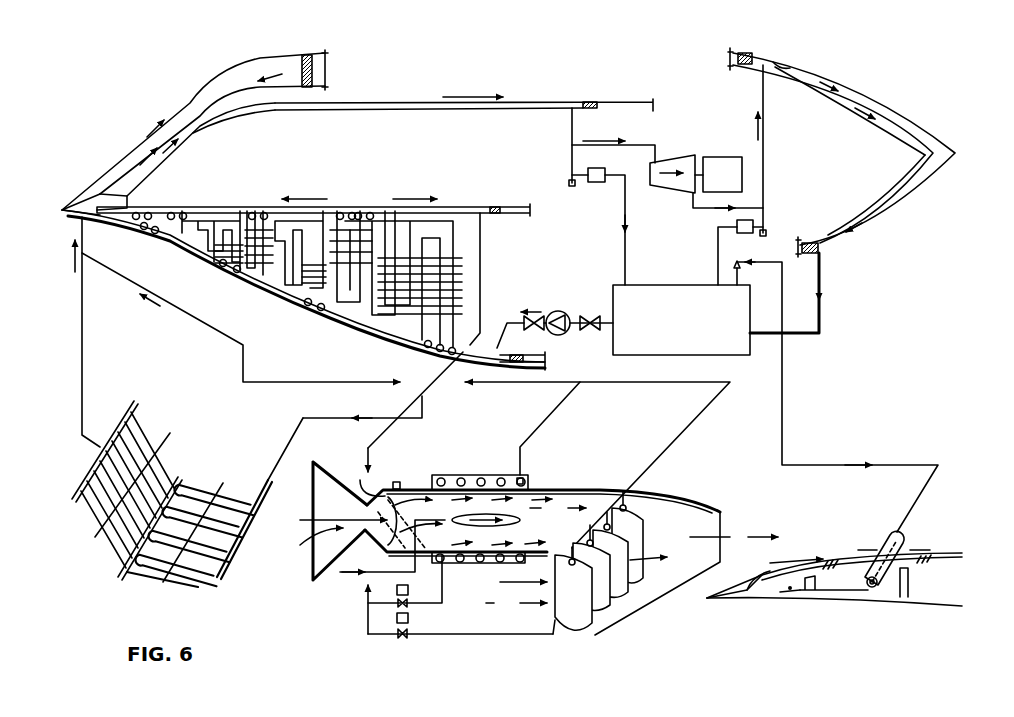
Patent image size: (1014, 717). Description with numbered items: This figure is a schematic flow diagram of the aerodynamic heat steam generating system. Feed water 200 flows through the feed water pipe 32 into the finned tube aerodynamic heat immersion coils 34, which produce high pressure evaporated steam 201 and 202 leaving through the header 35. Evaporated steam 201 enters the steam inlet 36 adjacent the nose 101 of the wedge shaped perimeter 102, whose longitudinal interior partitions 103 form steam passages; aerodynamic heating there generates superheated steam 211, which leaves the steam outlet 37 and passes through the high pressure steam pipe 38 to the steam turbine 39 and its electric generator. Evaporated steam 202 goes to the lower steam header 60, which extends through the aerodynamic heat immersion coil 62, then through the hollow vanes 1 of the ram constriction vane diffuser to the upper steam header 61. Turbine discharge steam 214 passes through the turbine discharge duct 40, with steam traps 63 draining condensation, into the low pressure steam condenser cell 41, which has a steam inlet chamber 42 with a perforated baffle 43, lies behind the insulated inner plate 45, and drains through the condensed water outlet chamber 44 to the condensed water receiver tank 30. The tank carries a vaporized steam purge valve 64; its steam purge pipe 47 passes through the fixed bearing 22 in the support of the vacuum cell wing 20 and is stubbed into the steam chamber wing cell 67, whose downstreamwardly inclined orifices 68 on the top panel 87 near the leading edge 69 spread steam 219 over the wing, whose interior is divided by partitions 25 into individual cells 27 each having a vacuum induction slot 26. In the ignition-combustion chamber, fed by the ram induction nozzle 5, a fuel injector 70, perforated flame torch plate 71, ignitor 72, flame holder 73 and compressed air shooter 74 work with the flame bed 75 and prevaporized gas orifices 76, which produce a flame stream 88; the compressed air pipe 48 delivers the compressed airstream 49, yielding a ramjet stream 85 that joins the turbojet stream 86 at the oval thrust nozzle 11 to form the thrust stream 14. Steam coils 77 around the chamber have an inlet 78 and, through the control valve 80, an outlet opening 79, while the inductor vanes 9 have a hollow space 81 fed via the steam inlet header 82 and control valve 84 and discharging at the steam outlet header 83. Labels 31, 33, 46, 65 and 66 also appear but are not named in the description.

The forward nose 101 is at (62, 210).
The steam inlet 36 is at (82, 213).
The wedge shaped perimeter 102 is at (198, 80).
The longitudinal interior partitions 103 is at (260, 76).
The steam outlet 37 is at (189, 133).
The high pressure steam pipe 38 is at (378, 105).
The superheated steam 211 is at (157, 167).
The header 35 is at (234, 199).
The evaporated steam 201 is at (307, 187).
The evaporated steam 202 is at (415, 187).
The plate end 33 is at (500, 206).
The feed water pipe 32 is at (380, 336).
The finned tube aerodynamic heat immersion coils 34 is at (425, 256).
The steam turbine 39 is at (706, 171).
The steam trap 63 is at (672, 226).
The turbine discharge duct 40 is at (765, 158).
The turbine discharge steam 214 is at (757, 124).
The steam inlet chamber 42 is at (752, 58).
The low pressure steam condenser cell 41 is at (822, 80).
The perforated baffle 43 is at (788, 66).
The insulated inner plate 45 is at (872, 118).
The condensed water outlet chamber 44 is at (822, 250).
The vaporized steam purge valve 64 is at (758, 296).
The return conduit 46 is at (821, 318).
The steam purge pipe 47 is at (782, 380).
The condensed water receiver tank 30 is at (681, 320).
The feed water 200 is at (534, 310).
The valve 66 is at (521, 320).
The pump 31 is at (556, 311).
The valve 65 is at (590, 330).
The upper steam header 61 is at (133, 402).
The hollow vanes 1 is at (157, 452).
The lower steam header 60 is at (178, 480).
The aerodynamic heat immersion coil 62 is at (215, 500).
The ram induction nozzle 5 is at (318, 506).
The perforated flame torch plate 71 is at (361, 472).
The ignitor 72 is at (397, 483).
The flame holder 73 is at (400, 497).
The fuel injector 70 is at (390, 527).
The steam coils 77 is at (443, 477).
The vaporized gas injecting orifices 76 is at (475, 480).
The outlet opening 79 is at (523, 480).
The flame bed 75 is at (556, 490).
The flame stream 88 is at (473, 514).
The compressed air shooter 74 is at (440, 522).
The compressed airstream 49 is at (503, 519).
The ramjet stream 85 is at (558, 507).
The compressed air pipe 48 is at (358, 580).
The inlet 78 is at (446, 565).
The control valve 80 is at (408, 590).
The control valve 84 is at (409, 620).
The turbojet stream 86 is at (516, 598).
The hollow space 81 is at (636, 508).
The inductor vanes 9 is at (646, 587).
The steam outlet header 83 is at (577, 533).
The steam inlet header 82 is at (560, 627).
The oval thrust nozzle 11 is at (722, 517).
The oval thrust stream 14 is at (734, 536).
The leading edge 69 is at (707, 598).
The vacuum cell lift-thrust generating wing 20 is at (873, 604).
The top panel 87 is at (722, 592).
The steam 219 is at (796, 551).
The vacuum induction slot 26 is at (828, 565).
The downstreamwardly inclined orifices 68 is at (757, 590).
The steam chamber wing cell 67 is at (791, 590).
The partitions 25 is at (908, 576).
The individual cell 27 is at (950, 587).
The fixed bearing 22 is at (907, 536).